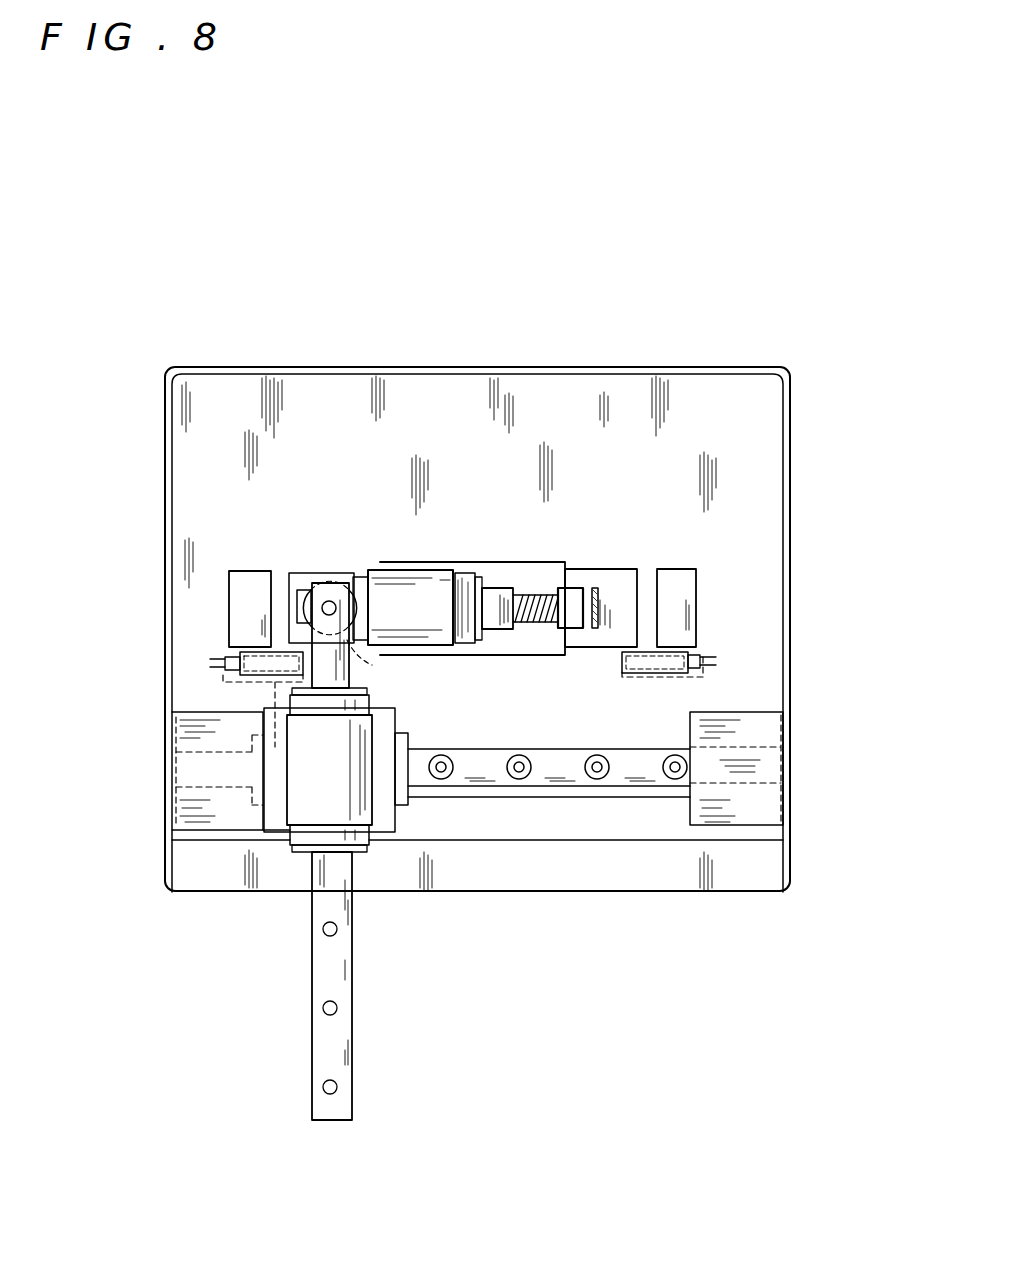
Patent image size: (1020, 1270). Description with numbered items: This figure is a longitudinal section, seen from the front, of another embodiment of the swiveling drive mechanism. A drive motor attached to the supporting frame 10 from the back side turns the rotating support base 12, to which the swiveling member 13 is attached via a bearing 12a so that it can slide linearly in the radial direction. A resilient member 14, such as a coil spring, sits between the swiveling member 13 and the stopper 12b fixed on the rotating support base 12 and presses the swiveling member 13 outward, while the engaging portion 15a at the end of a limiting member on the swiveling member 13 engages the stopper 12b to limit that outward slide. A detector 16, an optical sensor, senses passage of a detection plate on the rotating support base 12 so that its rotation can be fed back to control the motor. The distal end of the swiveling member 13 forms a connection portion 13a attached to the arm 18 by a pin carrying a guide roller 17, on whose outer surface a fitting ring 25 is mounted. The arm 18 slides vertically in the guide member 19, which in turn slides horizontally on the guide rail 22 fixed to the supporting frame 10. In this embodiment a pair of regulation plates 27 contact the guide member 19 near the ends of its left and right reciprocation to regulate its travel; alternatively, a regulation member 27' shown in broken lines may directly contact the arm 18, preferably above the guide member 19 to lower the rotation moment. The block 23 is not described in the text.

The supporting frame 10 is at (737, 445).
The rotating support base 12 is at (466, 538).
The bearing 12a is at (400, 578).
The stopper 12b is at (578, 575).
The swiveling member 13 is at (495, 620).
The connection portion 13a is at (297, 623).
The resilient member 14 is at (528, 575).
The engaging portion 15a is at (598, 628).
The detector 16 is at (253, 682).
The guide roller 17 is at (372, 665).
The arm 18 is at (353, 970).
The guide member 19 is at (277, 832).
The guide rail 22 is at (647, 787).
The support block 23 is at (230, 608).
The fitting ring 25 is at (300, 623).
The regulation plate 27 is at (435, 866).
The regulation member 27' is at (395, 738).